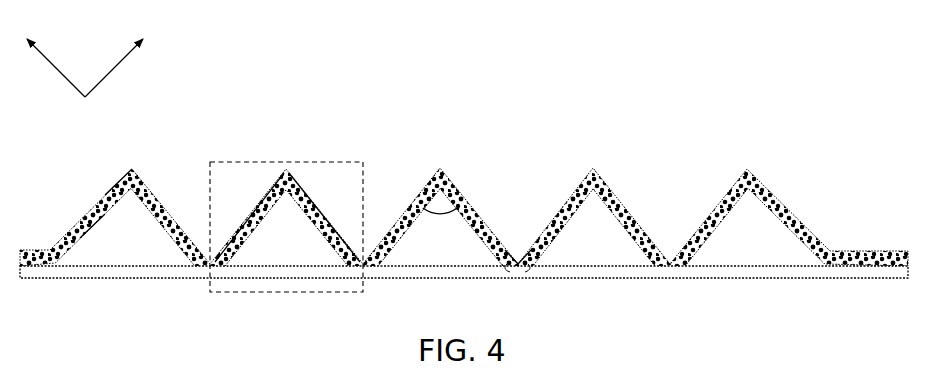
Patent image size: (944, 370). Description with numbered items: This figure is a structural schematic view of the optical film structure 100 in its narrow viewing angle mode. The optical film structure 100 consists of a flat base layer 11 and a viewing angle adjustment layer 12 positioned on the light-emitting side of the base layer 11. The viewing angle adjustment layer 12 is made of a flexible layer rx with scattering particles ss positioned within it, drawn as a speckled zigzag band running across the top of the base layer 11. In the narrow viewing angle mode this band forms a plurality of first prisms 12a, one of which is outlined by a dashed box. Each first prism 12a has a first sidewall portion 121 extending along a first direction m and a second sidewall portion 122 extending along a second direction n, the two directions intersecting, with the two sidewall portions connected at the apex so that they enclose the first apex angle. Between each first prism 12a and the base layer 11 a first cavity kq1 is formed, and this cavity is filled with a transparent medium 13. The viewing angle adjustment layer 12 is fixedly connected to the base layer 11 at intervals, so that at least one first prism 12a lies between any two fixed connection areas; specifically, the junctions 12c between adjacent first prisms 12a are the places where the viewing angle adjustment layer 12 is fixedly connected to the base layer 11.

The optical film structure 100 is at (905, 41).
The base layer 11 is at (102, 272).
The viewing angle adjustment layer 12 is at (64, 166).
The first prism 12a is at (210, 162).
The junction 12c is at (522, 228).
The first sidewall portion 121 is at (250, 223).
The second sidewall portion 122 is at (317, 195).
The transparent medium 13 is at (581, 245).
The first cavity kq1 is at (749, 239).
The scattering particles ss is at (125, 175).
The flexible layer rx is at (100, 199).
The second direction n is at (56, 63).
The first direction m is at (114, 63).